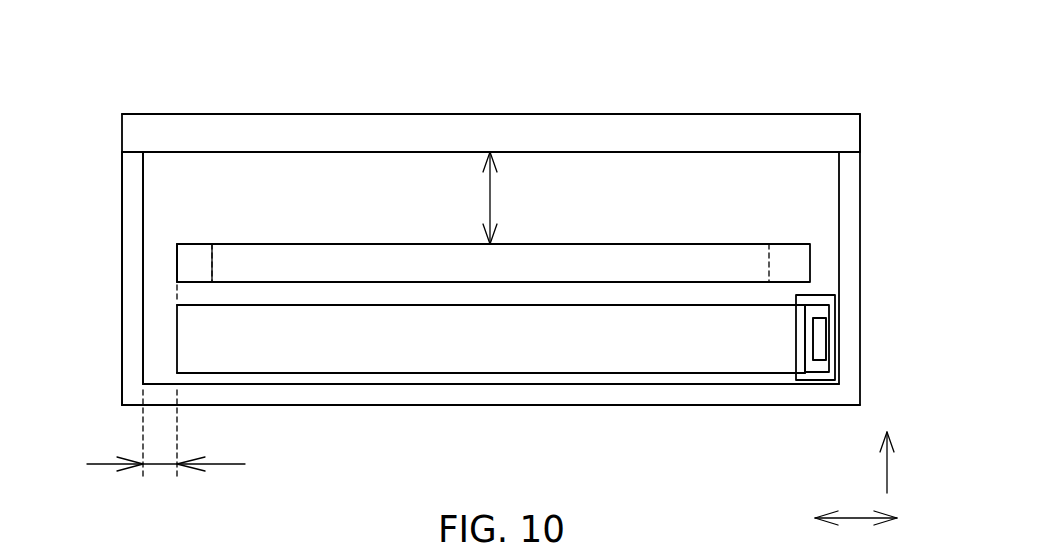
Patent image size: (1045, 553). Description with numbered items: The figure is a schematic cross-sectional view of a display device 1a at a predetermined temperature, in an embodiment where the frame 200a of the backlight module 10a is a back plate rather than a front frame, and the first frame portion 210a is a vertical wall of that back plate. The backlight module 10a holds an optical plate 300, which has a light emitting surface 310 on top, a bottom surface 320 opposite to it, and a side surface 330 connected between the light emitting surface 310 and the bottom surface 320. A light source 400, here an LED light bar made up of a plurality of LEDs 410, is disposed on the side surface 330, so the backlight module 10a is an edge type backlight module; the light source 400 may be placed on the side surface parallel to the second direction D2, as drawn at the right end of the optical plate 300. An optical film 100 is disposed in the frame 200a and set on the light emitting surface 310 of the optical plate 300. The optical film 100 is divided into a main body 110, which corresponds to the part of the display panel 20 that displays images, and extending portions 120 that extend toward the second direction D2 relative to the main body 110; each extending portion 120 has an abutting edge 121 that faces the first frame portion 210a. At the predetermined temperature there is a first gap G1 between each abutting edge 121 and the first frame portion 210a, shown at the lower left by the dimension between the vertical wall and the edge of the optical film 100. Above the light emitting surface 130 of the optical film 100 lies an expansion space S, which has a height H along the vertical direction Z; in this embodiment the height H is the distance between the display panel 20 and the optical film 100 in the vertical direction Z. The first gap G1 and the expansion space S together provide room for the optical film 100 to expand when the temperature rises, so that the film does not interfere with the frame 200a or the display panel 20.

The display device 1a is at (99, 39).
The backlight module 10a is at (865, 165).
The display panel 20 is at (862, 96).
The expansion space S is at (704, 187).
The first frame portion 210a is at (132, 167).
The frame 200a is at (133, 356).
The optical film 100 is at (436, 260).
The main body 110 is at (240, 253).
The extending portion 120 is at (192, 254).
The abutting edge 121 is at (177, 270).
The light emitting surface 130 is at (323, 243).
The height H is at (504, 198).
The optical plate 300 is at (433, 353).
The light emitting surface 310 is at (353, 305).
The bottom surface 320 is at (676, 373).
The side surface 330 is at (805, 342).
The light source 400 is at (832, 352).
The LED 410 is at (819, 348).
The first gap G1 is at (166, 381).
The vertical direction Z is at (899, 462).
The second direction D2 is at (880, 518).